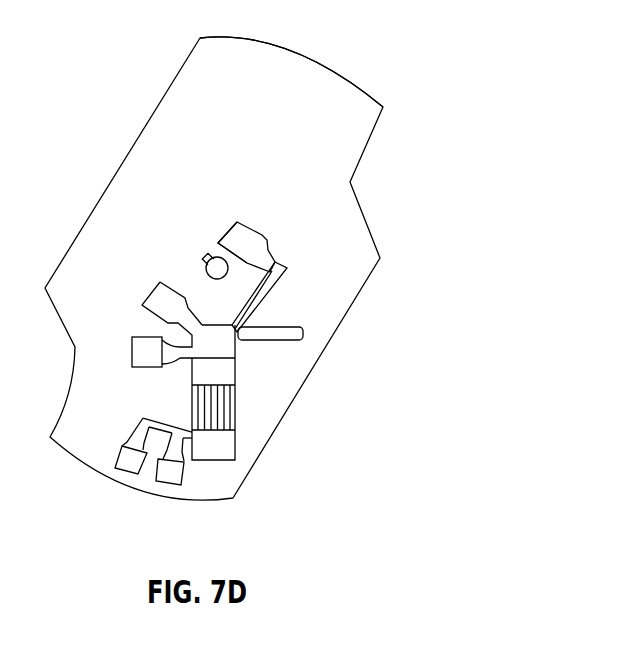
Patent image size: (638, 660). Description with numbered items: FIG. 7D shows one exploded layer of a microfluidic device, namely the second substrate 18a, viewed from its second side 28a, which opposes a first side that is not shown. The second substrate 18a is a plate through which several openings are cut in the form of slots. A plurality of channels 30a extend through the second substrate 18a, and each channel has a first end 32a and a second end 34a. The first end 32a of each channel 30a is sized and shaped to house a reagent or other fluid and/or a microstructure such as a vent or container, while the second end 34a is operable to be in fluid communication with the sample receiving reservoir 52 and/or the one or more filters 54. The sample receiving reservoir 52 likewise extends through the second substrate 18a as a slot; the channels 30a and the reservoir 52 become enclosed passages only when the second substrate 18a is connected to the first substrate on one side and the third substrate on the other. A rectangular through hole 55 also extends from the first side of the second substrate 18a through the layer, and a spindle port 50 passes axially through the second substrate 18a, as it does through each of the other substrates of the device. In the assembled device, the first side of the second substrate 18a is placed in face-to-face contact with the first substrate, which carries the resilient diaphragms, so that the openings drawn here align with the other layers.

The second substrate 18a is at (363, 214).
The second side 28a is at (315, 82).
The channels 30a is at (262, 235).
The first end 32a is at (233, 227).
The spindle port 50 is at (204, 255).
The second end 34a is at (280, 261).
The sample receiving reservoir 52 is at (241, 318).
The rectangular through hole 55 is at (303, 333).
The filters 54 is at (232, 410).